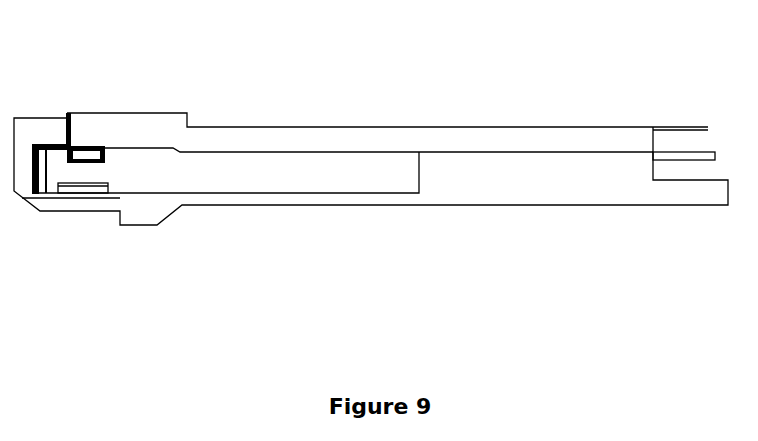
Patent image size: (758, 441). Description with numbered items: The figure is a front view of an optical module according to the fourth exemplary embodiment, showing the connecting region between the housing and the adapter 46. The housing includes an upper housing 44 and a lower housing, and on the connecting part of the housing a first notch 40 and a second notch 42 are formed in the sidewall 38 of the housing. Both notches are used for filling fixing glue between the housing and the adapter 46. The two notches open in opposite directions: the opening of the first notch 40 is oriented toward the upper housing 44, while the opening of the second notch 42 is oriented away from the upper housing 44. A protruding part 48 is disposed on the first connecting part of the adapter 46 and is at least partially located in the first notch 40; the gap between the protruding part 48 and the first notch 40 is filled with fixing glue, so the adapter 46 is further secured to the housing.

The sidewall 38 is at (355, 165).
The first notch 40 is at (100, 148).
The second notch 42 is at (85, 187).
The upper housing 44 is at (472, 143).
The adapter 46 is at (28, 132).
The protruding part 48 is at (87, 148).